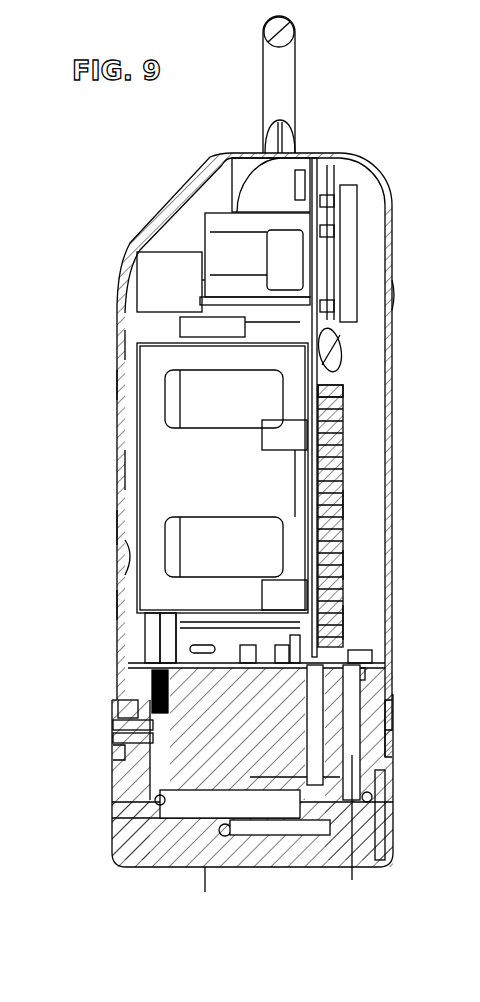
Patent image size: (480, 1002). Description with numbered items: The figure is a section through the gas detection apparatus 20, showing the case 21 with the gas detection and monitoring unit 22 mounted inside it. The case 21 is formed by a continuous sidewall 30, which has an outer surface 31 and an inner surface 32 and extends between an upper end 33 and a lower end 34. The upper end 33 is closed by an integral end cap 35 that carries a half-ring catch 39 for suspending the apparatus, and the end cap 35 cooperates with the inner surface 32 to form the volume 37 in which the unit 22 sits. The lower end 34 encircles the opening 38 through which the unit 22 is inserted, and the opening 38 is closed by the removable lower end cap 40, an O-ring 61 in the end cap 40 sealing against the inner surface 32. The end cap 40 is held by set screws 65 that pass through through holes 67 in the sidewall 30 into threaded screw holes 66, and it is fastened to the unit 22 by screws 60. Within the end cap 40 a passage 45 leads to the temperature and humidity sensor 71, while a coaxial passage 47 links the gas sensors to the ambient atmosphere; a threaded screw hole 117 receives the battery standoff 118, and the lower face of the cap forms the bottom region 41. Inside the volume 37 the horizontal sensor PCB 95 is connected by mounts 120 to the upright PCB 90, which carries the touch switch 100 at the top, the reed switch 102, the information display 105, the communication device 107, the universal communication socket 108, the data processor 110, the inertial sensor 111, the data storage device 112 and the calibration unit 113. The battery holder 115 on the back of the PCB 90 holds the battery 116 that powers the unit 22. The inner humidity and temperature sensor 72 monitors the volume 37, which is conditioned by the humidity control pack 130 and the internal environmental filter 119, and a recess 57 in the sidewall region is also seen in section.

The apparatus 20 is at (410, 150).
The case 21 is at (116, 346).
The gas detection and monitoring unit 22 is at (137, 470).
The continuous sidewall 30 is at (118, 385).
The outer surface 31 is at (117, 525).
The inner surface 32 is at (117, 597).
The upper end 33 is at (392, 302).
The lower end 34 is at (395, 750).
The end cap 35 is at (162, 210).
The volume 37 is at (245, 474).
The opening 38 is at (252, 766).
The catch 39 is at (278, 73).
The end cap 40 is at (391, 815).
The bottom of base 41 is at (200, 896).
The temperature and humidity sensor passage 45 is at (349, 848).
The coaxial passage 47 is at (242, 826).
The housing recess 57 is at (117, 560).
The screws 60 is at (268, 655).
The O-ring 61 is at (395, 715).
The set screws 65 is at (118, 735).
The threaded screw holes 66 is at (125, 758).
The through holes 67 is at (128, 705).
The temperature and humidity sensor 71 is at (365, 678).
The inner humidity and temperature sensor 72 is at (372, 656).
The PCB 90 is at (300, 330).
The sensor PCB 95 is at (345, 632).
The touch switch 100 is at (298, 150).
The reed switch 102 is at (318, 158).
The information display 105 is at (343, 443).
The communication device 107 is at (328, 222).
The universal communication socket 108 is at (350, 262).
The data processor 110 is at (343, 500).
The inertial sensor 111 is at (345, 618).
The data storage device 112 is at (345, 567).
The calibration unit 113 is at (328, 393).
The battery holder 115 is at (227, 487).
The battery 116 is at (148, 418).
The threaded screw hole 117 is at (150, 665).
The battery standoff 118 is at (145, 637).
The internal environmental filter 119 is at (137, 270).
The mounts 120 is at (300, 655).
The humidity control pack 130 is at (336, 356).